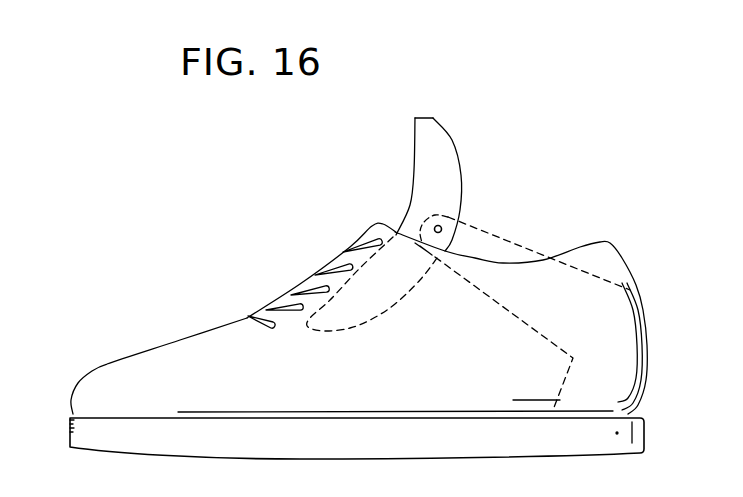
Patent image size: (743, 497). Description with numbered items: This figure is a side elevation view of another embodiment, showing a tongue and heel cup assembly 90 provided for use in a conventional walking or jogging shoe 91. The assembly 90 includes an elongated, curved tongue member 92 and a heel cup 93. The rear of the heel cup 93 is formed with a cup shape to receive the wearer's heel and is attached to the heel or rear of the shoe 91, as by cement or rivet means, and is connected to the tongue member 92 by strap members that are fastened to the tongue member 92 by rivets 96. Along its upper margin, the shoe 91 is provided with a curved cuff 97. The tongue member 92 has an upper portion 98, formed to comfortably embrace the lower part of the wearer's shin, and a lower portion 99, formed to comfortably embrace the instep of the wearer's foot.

The tongue and heel cup assembly 90 is at (496, 176).
The shoe 91 is at (106, 361).
The tongue member 92 is at (433, 122).
The heel cup 93 is at (623, 338).
The rivets 96 is at (430, 221).
The curved cuff 97 is at (503, 265).
The upper portion 98 is at (433, 168).
The lower portion 99 is at (373, 297).